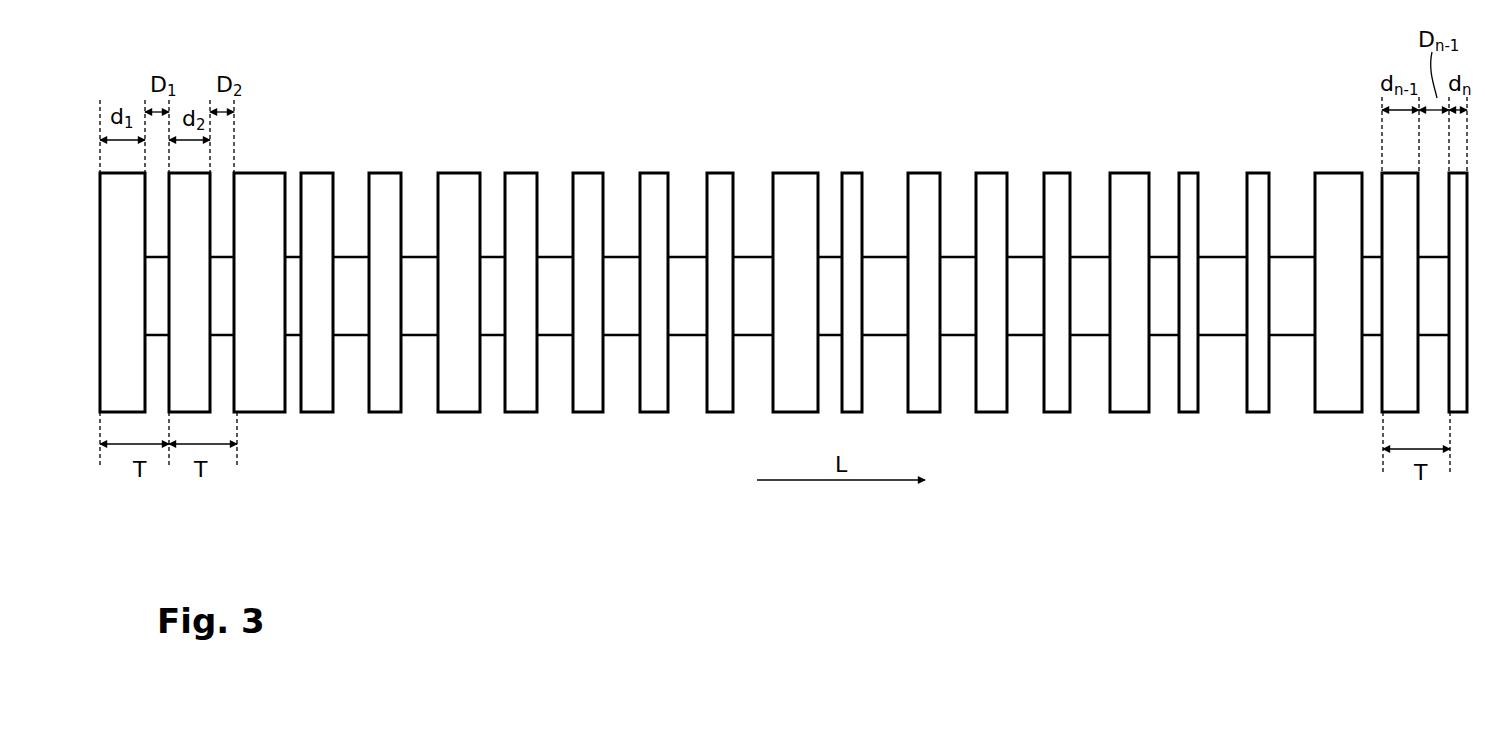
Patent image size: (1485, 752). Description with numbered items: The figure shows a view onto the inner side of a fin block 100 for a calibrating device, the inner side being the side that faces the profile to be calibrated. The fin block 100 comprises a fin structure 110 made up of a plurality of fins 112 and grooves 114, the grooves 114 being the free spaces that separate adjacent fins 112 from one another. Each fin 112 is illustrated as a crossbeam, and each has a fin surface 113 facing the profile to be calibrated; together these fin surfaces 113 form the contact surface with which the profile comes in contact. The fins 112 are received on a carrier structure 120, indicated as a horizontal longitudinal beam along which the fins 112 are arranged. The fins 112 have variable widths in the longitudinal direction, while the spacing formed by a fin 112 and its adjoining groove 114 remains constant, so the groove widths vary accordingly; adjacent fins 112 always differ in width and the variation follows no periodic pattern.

The fin block 100 is at (807, 31).
The fin structure 110 is at (678, 454).
The fin 112 is at (587, 175).
The fin surface 113 is at (520, 220).
The groove 114 is at (621, 213).
The carrier structure 120 is at (552, 306).